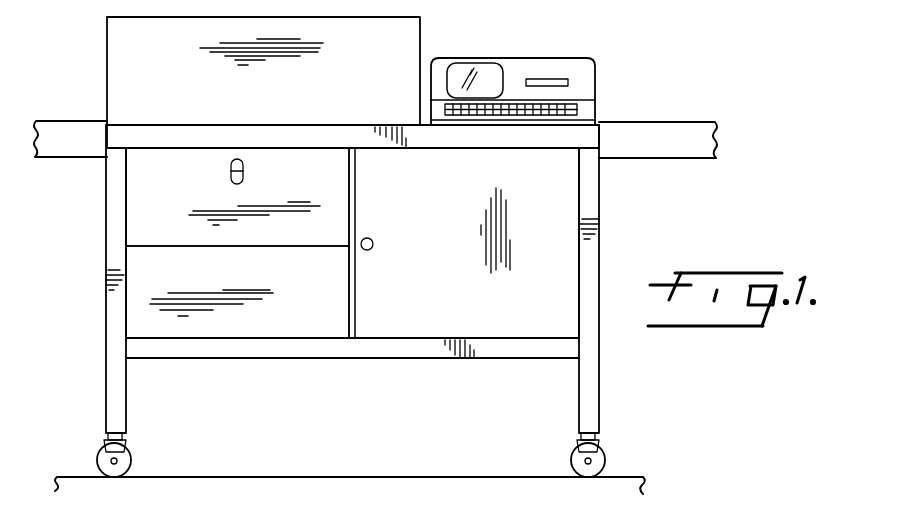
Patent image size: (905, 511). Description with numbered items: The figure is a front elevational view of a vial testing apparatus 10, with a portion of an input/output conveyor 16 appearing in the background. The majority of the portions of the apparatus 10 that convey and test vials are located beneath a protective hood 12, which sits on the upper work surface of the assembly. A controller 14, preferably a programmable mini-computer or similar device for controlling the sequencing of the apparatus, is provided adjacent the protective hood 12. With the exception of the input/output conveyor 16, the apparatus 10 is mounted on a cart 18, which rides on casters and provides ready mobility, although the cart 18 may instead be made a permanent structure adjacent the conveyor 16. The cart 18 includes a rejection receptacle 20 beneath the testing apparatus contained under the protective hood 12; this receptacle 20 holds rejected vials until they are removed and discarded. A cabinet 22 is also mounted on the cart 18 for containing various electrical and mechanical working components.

The testing apparatus 10 is at (98, 87).
The protective hood 12 is at (415, 47).
The controller 14 is at (588, 82).
The input/output conveyor 16 is at (659, 128).
The cart 18 is at (108, 390).
The rejection receptacle 20 is at (143, 192).
The cabinet 22 is at (437, 310).